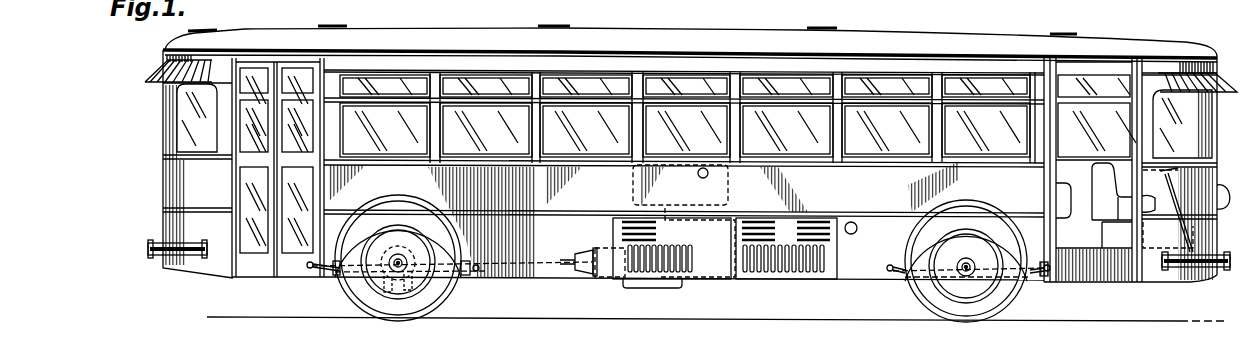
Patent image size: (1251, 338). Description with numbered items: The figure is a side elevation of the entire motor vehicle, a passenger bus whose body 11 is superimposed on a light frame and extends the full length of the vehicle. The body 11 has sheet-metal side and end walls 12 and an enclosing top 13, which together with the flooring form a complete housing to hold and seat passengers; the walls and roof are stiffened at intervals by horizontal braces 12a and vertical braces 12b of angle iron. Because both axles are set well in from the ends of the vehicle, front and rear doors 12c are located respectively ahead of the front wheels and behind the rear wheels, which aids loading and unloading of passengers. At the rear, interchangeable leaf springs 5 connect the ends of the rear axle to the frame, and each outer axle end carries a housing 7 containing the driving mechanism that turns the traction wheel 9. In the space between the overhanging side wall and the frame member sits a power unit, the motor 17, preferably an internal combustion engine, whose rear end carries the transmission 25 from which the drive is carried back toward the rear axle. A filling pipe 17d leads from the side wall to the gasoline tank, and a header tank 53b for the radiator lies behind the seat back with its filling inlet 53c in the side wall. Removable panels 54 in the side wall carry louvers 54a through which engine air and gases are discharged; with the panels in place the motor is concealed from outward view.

The interchangeable leaf springs 5 is at (340, 274).
The housing 7 is at (420, 292).
The traction wheel 9 is at (452, 284).
The body 11 is at (857, 268).
The side and end walls 12 is at (178, 181).
The horizontal braces 12a is at (872, 103).
The vertical braces 12b is at (537, 189).
The front and rear doors 12c is at (286, 266).
The enclosing top 13 is at (1125, 44).
The motor 17 is at (708, 268).
The filling pipe 17d is at (853, 222).
The transmission 25 is at (603, 278).
The header tank 53b is at (634, 168).
The filling inlet 53c is at (703, 168).
The panels 54 is at (703, 279).
The louvers 54a is at (658, 229).